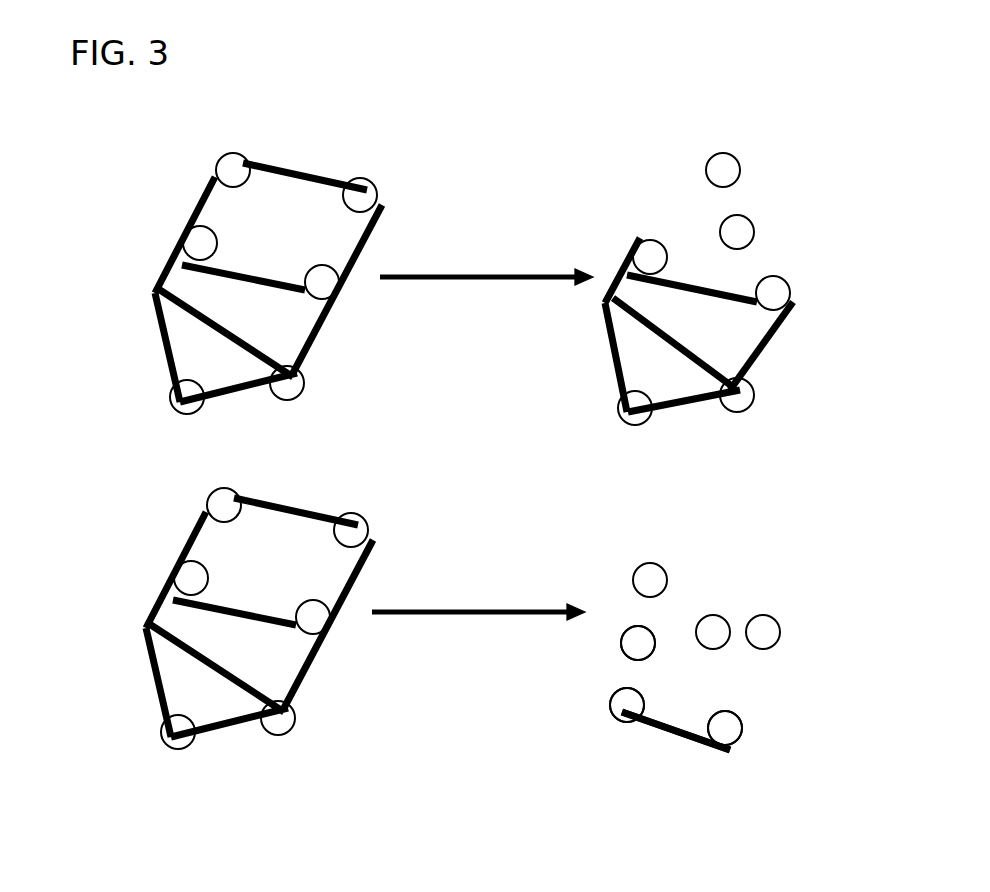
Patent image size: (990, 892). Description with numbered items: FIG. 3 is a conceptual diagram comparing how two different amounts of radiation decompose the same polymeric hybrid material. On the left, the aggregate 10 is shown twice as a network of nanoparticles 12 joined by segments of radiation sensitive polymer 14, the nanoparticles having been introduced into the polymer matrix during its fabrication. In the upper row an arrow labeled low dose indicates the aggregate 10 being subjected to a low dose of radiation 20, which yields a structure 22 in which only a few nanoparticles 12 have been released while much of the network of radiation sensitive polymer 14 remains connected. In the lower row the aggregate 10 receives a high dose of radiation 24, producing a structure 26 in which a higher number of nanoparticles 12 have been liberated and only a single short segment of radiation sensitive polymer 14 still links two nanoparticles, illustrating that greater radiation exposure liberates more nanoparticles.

The aggregate 10 is at (157, 183).
The nanoparticles 12 is at (787, 287).
The radiation sensitive polymer 14 is at (767, 345).
The low dose of radiation 20 is at (525, 212).
The structure 22 is at (862, 284).
The high dose of radiation 24 is at (513, 550).
The structure 26 is at (827, 663).